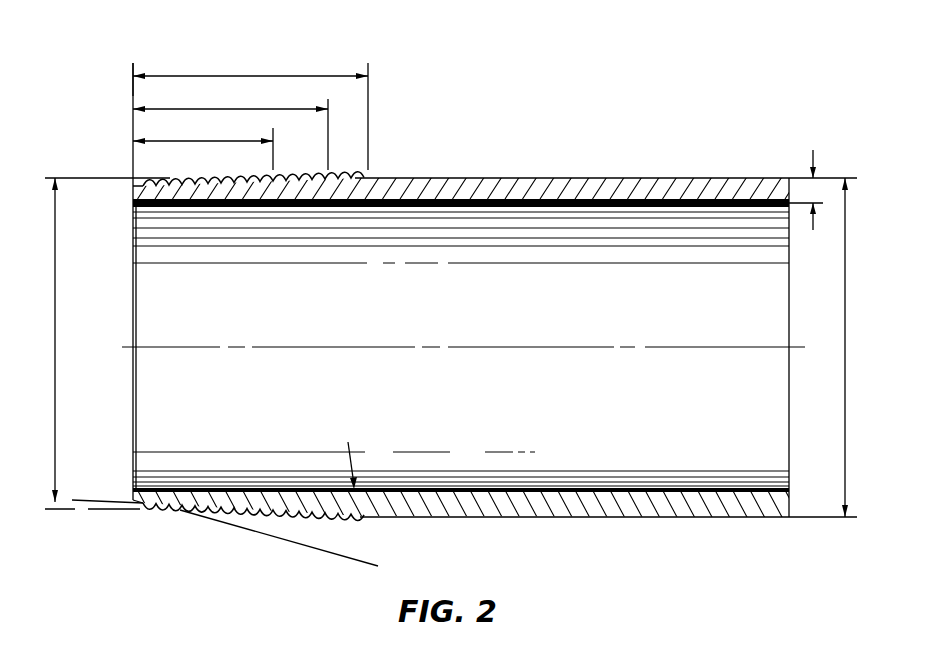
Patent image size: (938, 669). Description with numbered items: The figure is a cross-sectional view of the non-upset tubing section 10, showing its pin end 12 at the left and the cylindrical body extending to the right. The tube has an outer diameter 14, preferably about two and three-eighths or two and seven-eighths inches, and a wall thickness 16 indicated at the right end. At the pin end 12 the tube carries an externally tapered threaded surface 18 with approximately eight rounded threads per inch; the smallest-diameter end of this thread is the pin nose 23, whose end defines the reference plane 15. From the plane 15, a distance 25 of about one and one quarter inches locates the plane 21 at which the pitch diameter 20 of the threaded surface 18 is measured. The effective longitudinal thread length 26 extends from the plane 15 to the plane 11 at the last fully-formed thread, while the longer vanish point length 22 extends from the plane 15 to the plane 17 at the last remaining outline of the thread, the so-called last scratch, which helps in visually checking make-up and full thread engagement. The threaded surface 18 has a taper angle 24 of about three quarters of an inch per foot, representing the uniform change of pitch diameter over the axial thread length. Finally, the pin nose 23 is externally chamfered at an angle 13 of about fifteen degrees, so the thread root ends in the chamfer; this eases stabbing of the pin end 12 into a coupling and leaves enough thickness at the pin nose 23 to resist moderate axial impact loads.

The non-upset tubing section 10 is at (547, 176).
The plane located at the last fully-formed thread 11 is at (328, 133).
The pin end 12 is at (328, 498).
The chamfer angle 13 is at (346, 560).
The outer diameter 14 is at (846, 314).
The plane located at the end of the pin nose 15 is at (133, 96).
The wall thickness 16 is at (814, 154).
The plane located at the last remaining outline of the threaded surface 17 is at (368, 94).
The externally tapered threaded surface 18 is at (270, 498).
The pitch diameter 20 is at (55, 307).
The plane 21 is at (273, 152).
The vanish point length 22 is at (237, 77).
The pin nose 23 is at (130, 498).
The taper angle 24 is at (84, 498).
The distance 25 is at (211, 142).
The effective longitudinal thread length 26 is at (226, 109).